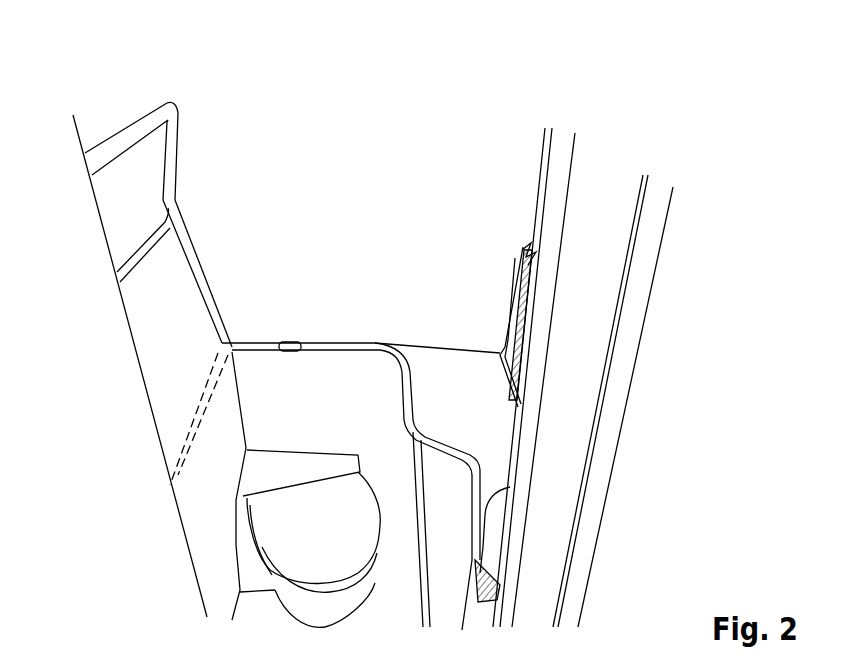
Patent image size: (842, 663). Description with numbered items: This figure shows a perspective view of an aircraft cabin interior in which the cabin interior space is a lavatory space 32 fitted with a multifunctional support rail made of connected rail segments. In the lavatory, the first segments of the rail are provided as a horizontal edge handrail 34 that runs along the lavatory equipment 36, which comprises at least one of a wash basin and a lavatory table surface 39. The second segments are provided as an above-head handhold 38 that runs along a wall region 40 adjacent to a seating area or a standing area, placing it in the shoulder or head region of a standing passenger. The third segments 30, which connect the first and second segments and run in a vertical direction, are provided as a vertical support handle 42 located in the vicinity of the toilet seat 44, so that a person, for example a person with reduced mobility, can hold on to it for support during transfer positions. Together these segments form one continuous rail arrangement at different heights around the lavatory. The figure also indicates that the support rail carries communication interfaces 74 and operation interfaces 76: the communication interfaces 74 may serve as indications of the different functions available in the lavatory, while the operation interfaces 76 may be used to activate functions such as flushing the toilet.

The third segments 30 is at (206, 217).
The lavatory space 32 is at (353, 138).
The horizontal edge handrail 34 is at (376, 330).
The lavatory equipment 36 is at (463, 390).
The above-head handhold 38 is at (113, 128).
The lavatory table surface 39 is at (495, 429).
The wall region 40 is at (157, 327).
The vertical support handle 42 is at (229, 336).
The toilet seat 44 is at (303, 513).
The communication interfaces 74 is at (477, 574).
The operation interfaces 76 is at (290, 343).